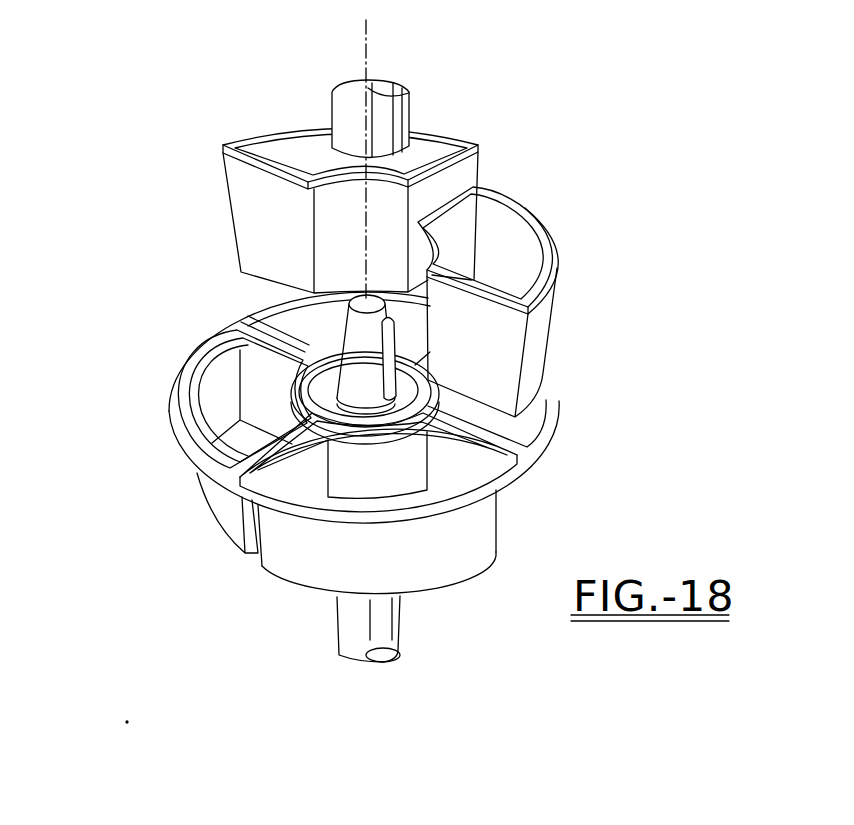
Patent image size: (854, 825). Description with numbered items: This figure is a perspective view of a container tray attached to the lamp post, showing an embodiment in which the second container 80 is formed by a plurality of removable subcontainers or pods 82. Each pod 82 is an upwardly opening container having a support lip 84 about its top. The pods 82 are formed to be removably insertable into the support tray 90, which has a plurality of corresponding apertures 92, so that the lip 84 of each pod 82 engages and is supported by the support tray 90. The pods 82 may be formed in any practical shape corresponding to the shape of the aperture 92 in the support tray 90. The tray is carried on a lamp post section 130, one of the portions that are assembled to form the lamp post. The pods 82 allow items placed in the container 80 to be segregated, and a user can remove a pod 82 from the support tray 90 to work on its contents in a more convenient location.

The second container 80 is at (365, 341).
The pod 82 is at (328, 257).
The support lip 84 is at (480, 148).
The support tray 90 is at (555, 397).
The aperture 92 is at (507, 428).
The lamp post section 130 is at (408, 107).